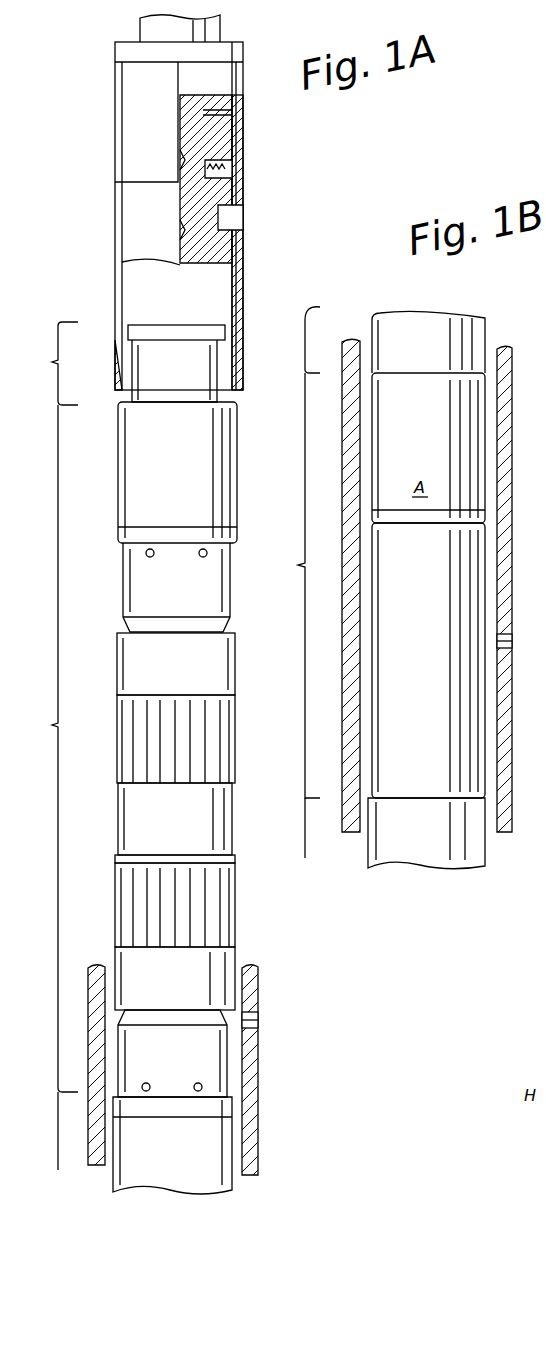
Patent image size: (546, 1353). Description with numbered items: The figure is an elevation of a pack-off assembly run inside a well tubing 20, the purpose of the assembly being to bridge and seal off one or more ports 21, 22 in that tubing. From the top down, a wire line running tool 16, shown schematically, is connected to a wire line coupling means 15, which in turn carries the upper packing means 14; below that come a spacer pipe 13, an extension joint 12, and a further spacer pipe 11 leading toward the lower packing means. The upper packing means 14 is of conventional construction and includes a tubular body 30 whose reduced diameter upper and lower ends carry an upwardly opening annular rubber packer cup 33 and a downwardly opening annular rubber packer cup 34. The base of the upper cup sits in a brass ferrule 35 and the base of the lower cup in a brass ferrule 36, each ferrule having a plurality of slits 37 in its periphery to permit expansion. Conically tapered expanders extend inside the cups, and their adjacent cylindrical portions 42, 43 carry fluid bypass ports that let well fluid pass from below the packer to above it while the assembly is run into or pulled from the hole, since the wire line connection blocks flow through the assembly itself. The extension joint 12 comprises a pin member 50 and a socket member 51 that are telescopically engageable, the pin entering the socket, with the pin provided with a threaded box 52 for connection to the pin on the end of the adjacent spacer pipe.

In FIG. 1B, the spacer pipe 11 is at (306, 842).
In FIG. 1B, the extension joint 12 is at (299, 585).
In FIG. 1A, the spacer pipe 13 is at (52, 1148).
In FIG. 1B, the spacer pipe 13 is at (310, 325).
In FIG. 1A, the upper packing means 14 is at (49, 748).
In FIG. 1A, the wire line coupling means 15 is at (51, 363).
In FIG. 1A, the wire line running tool 16 is at (130, 150).
In FIG. 1A, the well tubing 20 is at (258, 1140).
In FIG. 1B, the well tubing 20 is at (507, 505).
In FIG. 1B, the port 21 is at (507, 650).
In FIG. 1A, the port 22 is at (258, 1025).
In FIG. 1A, the tubular body 30 is at (186, 824).
In FIG. 1A, the upwardly opening annular rubber packer cup 33 is at (186, 671).
In FIG. 1A, the downwardly opening annular rubber packer cup 34 is at (186, 984).
In FIG. 1A, the ferrule 35 is at (213, 745).
In FIG. 1A, the ferrule 36 is at (228, 866).
In FIG. 1A, the slits 37 is at (210, 922).
In FIG. 1A, the cylindrical portion 42 is at (186, 594).
In FIG. 1A, the cylindrical portion 43 is at (186, 1059).
In FIG. 1A, the pin member 50 is at (238, 490).
In FIG. 1B, the socket member 51 is at (437, 759).
In FIG. 1B, the threaded box 52 is at (437, 446).